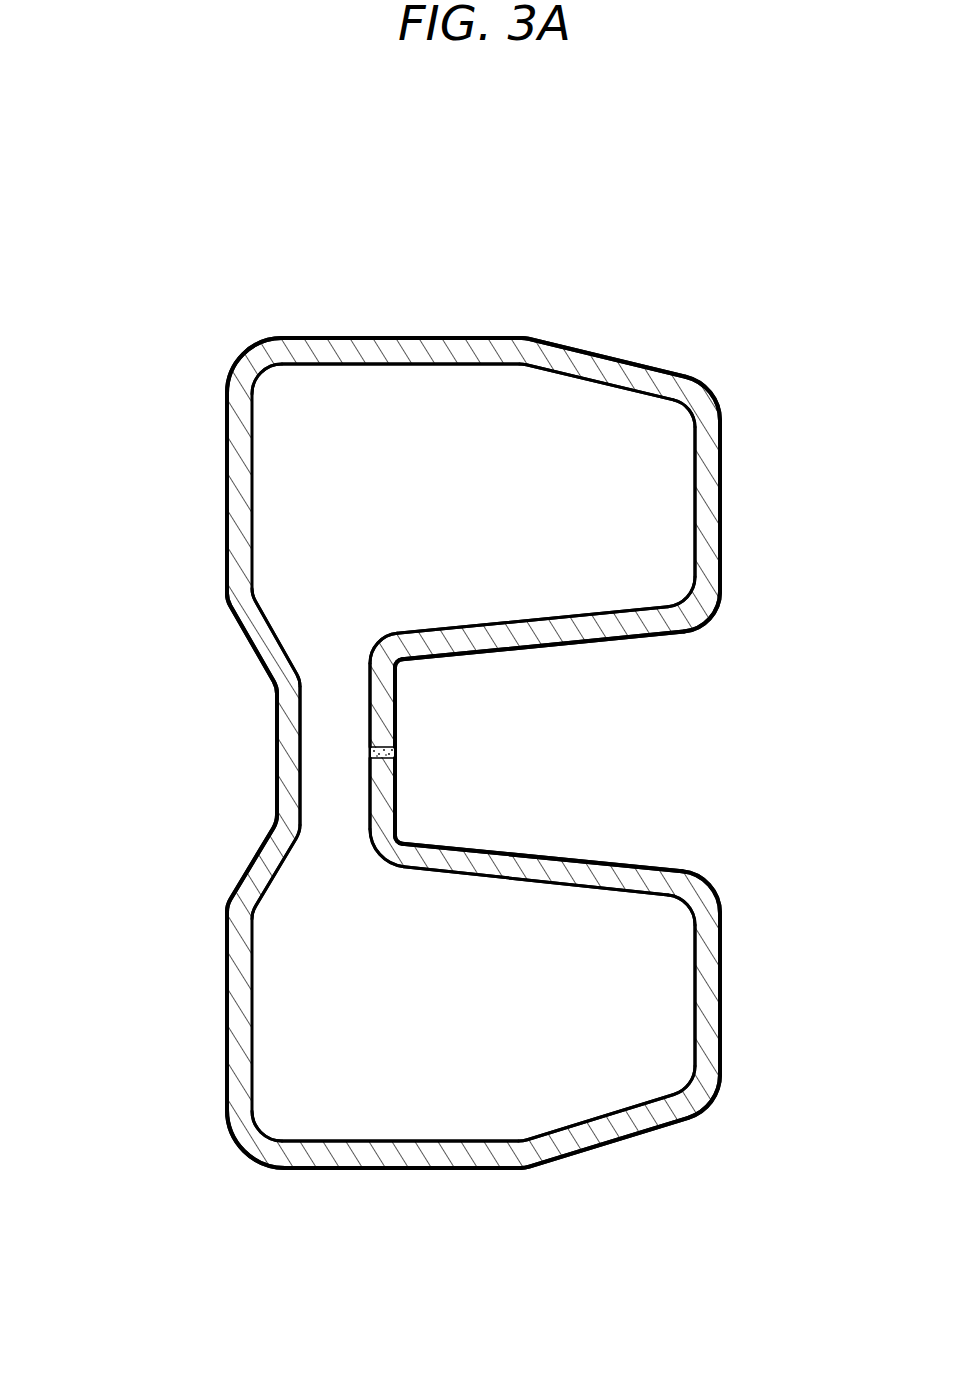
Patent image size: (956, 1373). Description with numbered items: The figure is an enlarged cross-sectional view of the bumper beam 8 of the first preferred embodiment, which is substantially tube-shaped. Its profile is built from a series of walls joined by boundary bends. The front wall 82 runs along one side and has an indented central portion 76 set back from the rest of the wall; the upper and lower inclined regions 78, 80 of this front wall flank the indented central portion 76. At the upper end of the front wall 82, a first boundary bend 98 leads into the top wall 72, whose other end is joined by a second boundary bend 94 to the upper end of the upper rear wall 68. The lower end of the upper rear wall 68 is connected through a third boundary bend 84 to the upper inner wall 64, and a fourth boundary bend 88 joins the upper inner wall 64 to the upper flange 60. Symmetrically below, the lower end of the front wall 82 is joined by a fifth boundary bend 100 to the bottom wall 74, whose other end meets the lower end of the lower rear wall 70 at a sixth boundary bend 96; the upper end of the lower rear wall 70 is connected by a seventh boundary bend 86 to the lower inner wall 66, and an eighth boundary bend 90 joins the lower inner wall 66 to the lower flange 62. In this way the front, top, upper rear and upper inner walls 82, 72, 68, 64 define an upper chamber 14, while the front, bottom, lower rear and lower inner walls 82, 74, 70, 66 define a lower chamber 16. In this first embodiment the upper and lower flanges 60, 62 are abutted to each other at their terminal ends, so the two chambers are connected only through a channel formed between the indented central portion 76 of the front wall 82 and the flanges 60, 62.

The bumper beam 8 is at (408, 715).
The upper chamber 14 is at (401, 311).
The lower chamber 16 is at (401, 1201).
The upper flange 60 is at (430, 705).
The lower flange 62 is at (433, 797).
The upper inner wall 64 is at (540, 595).
The lower inner wall 66 is at (542, 906).
The upper rear wall 68 is at (756, 506).
The lower rear wall 70 is at (756, 994).
The top wall 72 is at (603, 333).
The bottom wall 74 is at (569, 1177).
The indented central portion 76 is at (224, 756).
The upper inclined side wall portion 78 is at (224, 654).
The lower inclined side wall portion 80 is at (225, 857).
The front wall 82 is at (185, 753).
The third boundary bend 84 is at (725, 631).
The seventh boundary bend 86 is at (722, 872).
The fourth boundary bend 88 is at (367, 615).
The eighth boundary bend 90 is at (377, 889).
The second boundary bend 94 is at (718, 373).
The sixth boundary bend 96 is at (720, 1130).
The first boundary bend 98 is at (249, 328).
The fifth boundary bend 100 is at (222, 1172).